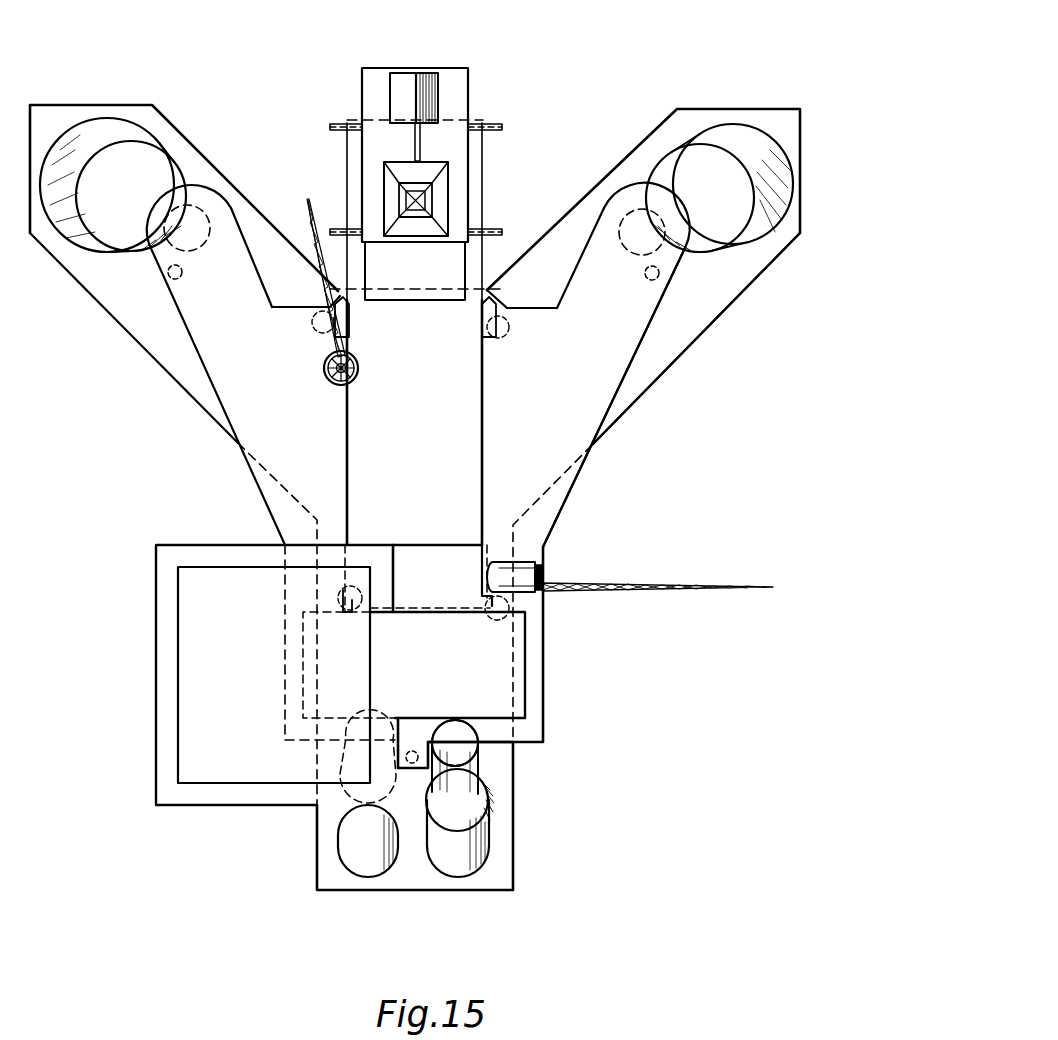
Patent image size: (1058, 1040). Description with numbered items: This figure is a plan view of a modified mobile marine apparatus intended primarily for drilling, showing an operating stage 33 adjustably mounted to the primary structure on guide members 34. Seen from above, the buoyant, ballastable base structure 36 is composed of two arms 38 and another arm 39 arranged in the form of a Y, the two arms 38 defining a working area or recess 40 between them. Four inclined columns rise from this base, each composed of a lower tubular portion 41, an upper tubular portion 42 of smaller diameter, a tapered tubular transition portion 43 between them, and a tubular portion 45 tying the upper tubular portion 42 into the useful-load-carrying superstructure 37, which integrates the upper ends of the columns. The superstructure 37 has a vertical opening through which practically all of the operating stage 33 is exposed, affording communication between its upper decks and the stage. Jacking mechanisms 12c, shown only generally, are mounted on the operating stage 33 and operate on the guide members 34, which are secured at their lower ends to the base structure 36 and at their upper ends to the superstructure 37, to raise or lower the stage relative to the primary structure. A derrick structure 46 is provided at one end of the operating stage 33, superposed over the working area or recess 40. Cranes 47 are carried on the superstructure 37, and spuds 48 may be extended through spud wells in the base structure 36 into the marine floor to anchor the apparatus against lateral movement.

The jacking mechanism 12c is at (350, 320).
The operating stage 33 is at (414, 422).
The guide member 34 is at (312, 325).
The base structure 36 is at (683, 372).
The useful-load-carrying superstructure 37 is at (565, 497).
The arm 38 is at (145, 343).
The arm 39 is at (513, 787).
The working area or recess 40 is at (428, 306).
The lower tubular portion 41 is at (416, 497).
The upper tubular portion 42 is at (203, 236).
The tapered tubular transition portion 43 is at (433, 792).
The tubular portion 45 is at (455, 743).
The derrick structure 46 is at (435, 166).
The crane 47 is at (318, 286).
The spud 48 is at (182, 280).